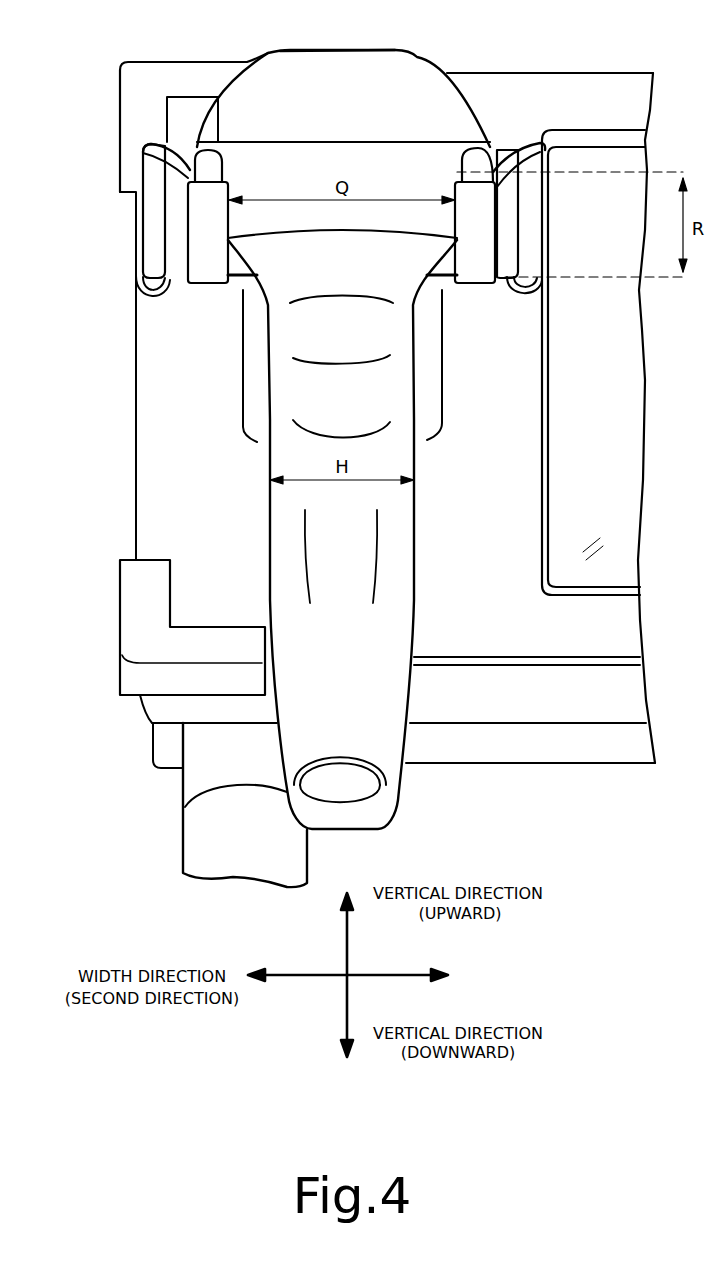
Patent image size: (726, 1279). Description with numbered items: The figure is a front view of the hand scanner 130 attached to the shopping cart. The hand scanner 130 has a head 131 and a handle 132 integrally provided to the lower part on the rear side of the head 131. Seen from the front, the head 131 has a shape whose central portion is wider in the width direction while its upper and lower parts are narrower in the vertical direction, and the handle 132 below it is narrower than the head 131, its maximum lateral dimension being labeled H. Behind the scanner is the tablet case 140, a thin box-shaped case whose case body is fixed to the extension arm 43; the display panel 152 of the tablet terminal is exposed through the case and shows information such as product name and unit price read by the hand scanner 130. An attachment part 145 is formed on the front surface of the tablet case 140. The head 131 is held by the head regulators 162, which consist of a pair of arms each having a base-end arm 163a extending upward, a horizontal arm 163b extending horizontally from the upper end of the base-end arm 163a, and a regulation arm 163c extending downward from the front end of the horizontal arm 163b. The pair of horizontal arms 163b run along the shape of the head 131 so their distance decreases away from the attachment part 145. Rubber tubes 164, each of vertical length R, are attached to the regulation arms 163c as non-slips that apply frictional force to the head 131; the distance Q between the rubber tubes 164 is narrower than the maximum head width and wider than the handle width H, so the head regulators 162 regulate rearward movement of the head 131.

The extension arm 43 is at (205, 852).
The hand scanner 130 is at (343, 74).
The head 131 is at (331, 84).
The handle 132 is at (400, 620).
The tablet case 140 is at (611, 72).
The attachment part 145 is at (243, 360).
The display panel 152 is at (627, 380).
The head regulators 162 is at (150, 192).
The base-end arm 163a is at (152, 172).
The horizontal arm 163b is at (172, 156).
The regulation arm 163c is at (207, 168).
The rubber tubes 164 is at (205, 236).